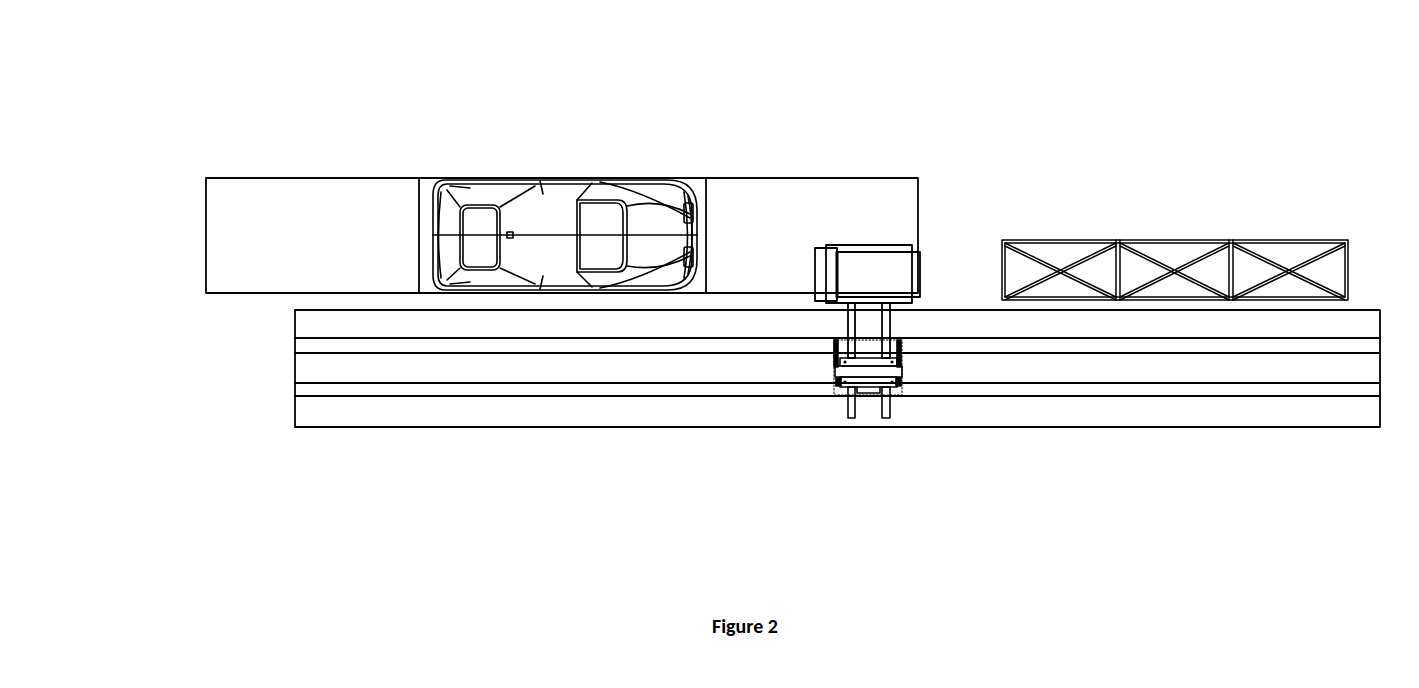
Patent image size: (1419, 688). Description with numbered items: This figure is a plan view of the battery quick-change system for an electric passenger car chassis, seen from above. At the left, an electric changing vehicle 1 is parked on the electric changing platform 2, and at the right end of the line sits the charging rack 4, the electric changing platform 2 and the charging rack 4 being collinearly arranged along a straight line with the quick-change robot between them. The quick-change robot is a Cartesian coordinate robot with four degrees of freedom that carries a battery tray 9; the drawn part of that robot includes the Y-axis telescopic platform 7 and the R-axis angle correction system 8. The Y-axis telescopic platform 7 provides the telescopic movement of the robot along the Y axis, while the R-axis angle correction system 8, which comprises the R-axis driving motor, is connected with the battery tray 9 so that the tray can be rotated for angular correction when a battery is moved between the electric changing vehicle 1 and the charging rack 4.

The electric changing vehicle 1 is at (384, 103).
The electric changing platform 2 is at (509, 180).
The charging rack 4 is at (1366, 142).
The Y-axis telescopic platform 7 is at (952, 371).
The R-axis angle correction system 8 is at (1044, 517).
The battery tray 9 is at (688, 490).